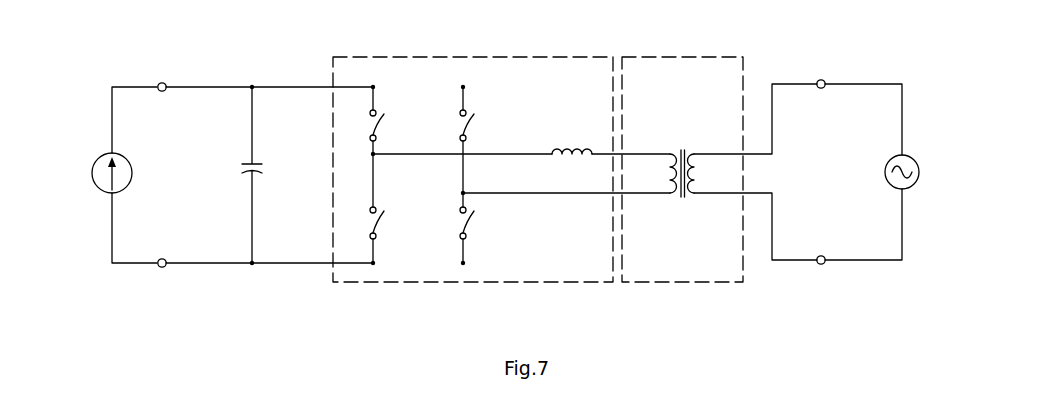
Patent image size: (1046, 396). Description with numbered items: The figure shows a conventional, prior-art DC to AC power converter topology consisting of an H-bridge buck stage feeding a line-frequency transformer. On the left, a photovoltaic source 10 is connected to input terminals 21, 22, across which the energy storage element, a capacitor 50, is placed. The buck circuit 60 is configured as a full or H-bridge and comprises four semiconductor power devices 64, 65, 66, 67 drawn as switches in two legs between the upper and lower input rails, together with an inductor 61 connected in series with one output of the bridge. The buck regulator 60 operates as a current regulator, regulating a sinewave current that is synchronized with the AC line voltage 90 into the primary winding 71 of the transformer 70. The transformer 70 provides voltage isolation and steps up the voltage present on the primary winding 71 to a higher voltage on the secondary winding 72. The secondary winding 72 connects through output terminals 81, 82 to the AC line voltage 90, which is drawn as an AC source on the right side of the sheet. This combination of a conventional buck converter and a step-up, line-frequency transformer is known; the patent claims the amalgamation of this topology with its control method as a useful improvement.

The photovoltaic source 10 is at (93, 165).
The input terminal 21 is at (162, 82).
The input terminal 22 is at (162, 268).
The capacitor 50 is at (259, 164).
The buck circuit 60 is at (474, 57).
The inductor 61 is at (571, 151).
The semiconductor power device 64 is at (379, 127).
The semiconductor power device 65 is at (379, 225).
The semiconductor power device 66 is at (469, 127).
The semiconductor power device 67 is at (469, 225).
The transformer 70 is at (683, 57).
The primary winding 71 is at (668, 173).
The secondary winding 72 is at (698, 173).
The output terminal 81 is at (821, 79).
The output terminal 82 is at (821, 256).
The AC line voltage 90 is at (914, 180).